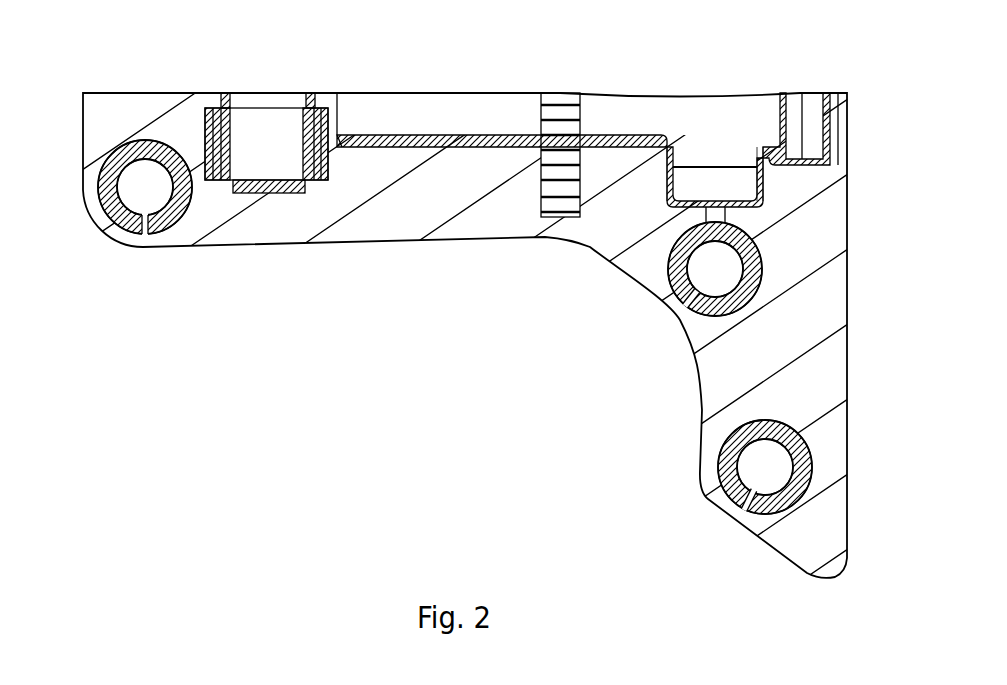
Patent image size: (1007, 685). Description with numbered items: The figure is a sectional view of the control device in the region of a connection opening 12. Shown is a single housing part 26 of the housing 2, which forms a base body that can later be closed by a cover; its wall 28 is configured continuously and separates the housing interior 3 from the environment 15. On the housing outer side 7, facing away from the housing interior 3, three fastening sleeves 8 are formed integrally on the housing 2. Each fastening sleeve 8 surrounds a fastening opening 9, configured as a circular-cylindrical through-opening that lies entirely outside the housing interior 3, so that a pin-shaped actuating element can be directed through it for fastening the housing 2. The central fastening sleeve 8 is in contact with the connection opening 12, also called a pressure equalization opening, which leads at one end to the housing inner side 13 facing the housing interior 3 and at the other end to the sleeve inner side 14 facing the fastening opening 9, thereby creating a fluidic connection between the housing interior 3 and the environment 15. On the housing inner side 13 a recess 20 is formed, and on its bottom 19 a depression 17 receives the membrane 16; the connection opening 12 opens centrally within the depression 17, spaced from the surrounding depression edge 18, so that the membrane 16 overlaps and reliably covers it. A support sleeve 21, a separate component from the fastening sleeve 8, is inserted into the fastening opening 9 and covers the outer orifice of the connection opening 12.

The housing 2 is at (449, 242).
The housing interior 3 is at (496, 118).
The housing outer side 7 is at (355, 242).
The fastening sleeve 8 is at (104, 223).
The fastening opening 9 is at (128, 165).
The connection opening 12 is at (716, 213).
The housing inner side 13 is at (610, 147).
The sleeve inner side 14 is at (738, 280).
The environment 15 is at (421, 408).
The membrane 16 is at (695, 176).
The depression 17 is at (757, 182).
The depression edge 18 is at (767, 172).
The bottom 19 is at (683, 178).
The recess 20 is at (717, 168).
The support sleeve 21 is at (165, 232).
The housing part 26 is at (257, 249).
The wall 28 is at (708, 400).